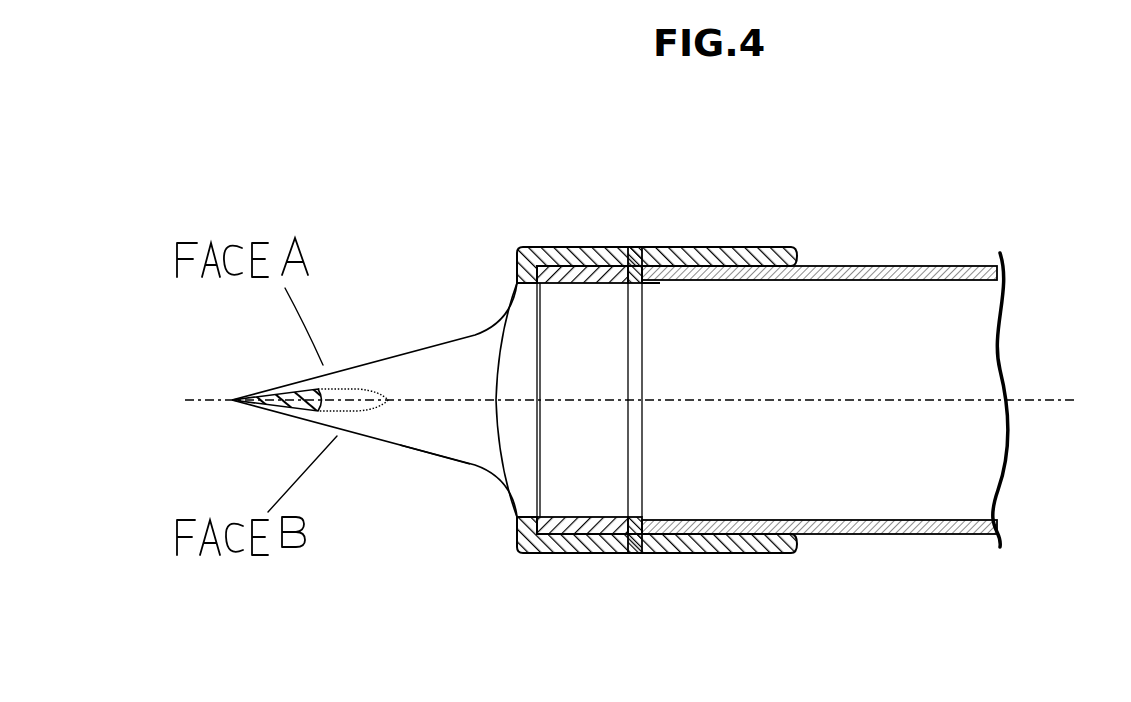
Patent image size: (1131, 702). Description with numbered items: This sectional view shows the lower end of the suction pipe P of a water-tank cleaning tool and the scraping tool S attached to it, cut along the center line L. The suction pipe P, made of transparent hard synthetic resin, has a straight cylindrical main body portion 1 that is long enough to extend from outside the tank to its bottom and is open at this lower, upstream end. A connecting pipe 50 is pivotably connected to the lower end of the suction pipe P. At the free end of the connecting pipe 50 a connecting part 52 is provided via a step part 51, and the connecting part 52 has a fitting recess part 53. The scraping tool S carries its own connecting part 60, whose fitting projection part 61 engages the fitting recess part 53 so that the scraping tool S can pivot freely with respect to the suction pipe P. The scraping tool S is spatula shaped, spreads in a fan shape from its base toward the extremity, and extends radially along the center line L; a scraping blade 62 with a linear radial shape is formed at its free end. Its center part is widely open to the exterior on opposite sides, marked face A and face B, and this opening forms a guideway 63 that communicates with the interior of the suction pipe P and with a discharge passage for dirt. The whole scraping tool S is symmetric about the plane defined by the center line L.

The main body portion 1 is at (890, 535).
The connecting pipe 50 is at (712, 247).
The step part 51 is at (640, 283).
The connecting part 52 is at (607, 283).
The fitting recess part 53 is at (583, 283).
The connecting part 60 is at (550, 247).
The fitting projection part 61 is at (565, 247).
The scraping blade 62 is at (265, 409).
The guideway 63 is at (440, 425).
The suction pipe P is at (905, 252).
The scraping tool S is at (423, 338).
The center line L is at (1068, 400).